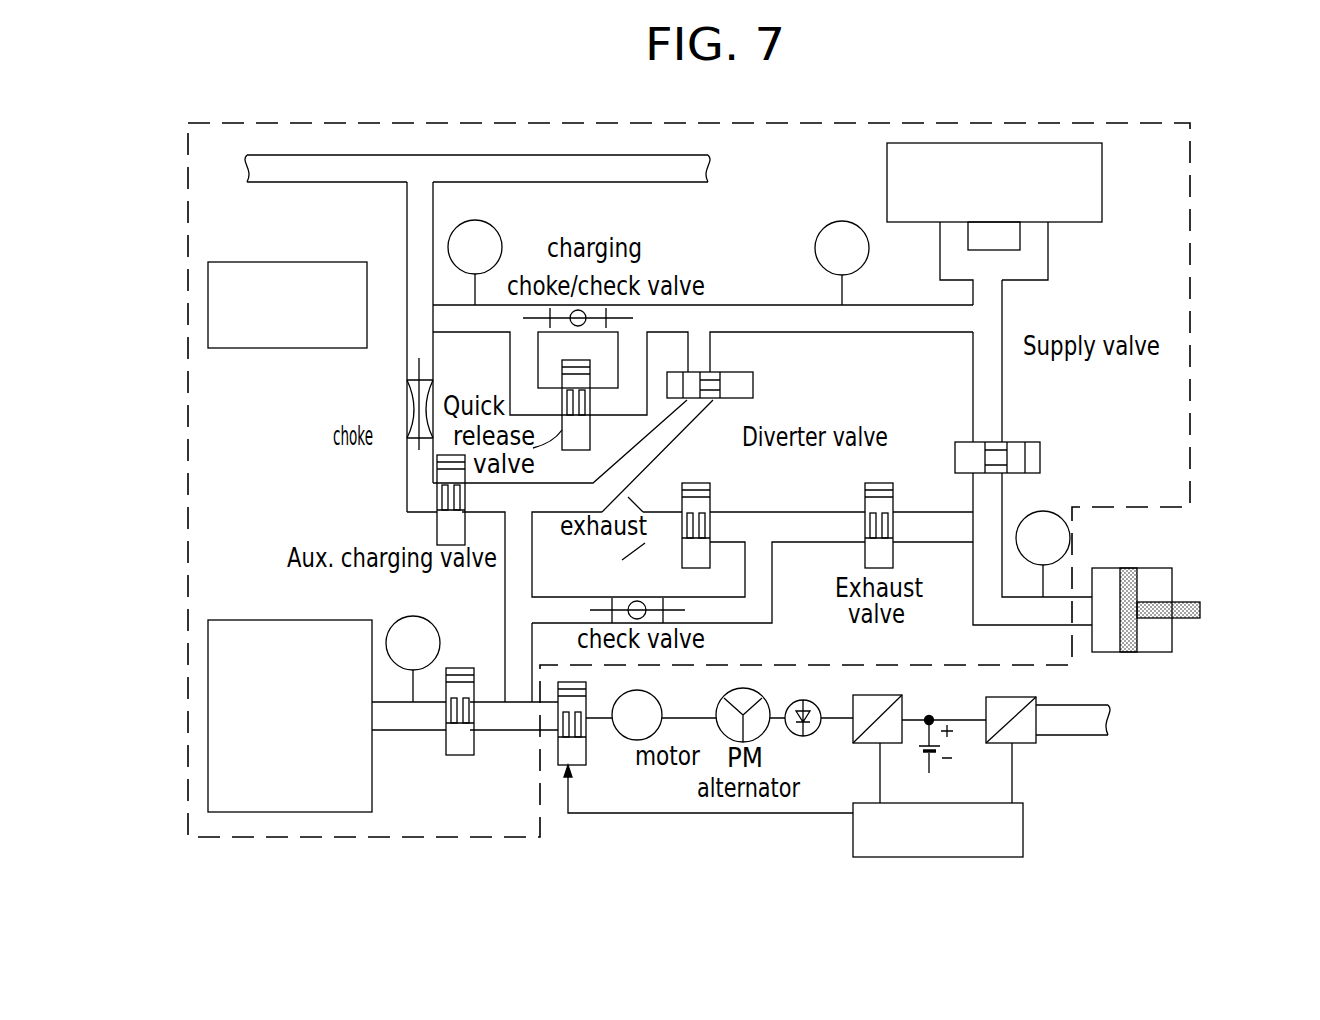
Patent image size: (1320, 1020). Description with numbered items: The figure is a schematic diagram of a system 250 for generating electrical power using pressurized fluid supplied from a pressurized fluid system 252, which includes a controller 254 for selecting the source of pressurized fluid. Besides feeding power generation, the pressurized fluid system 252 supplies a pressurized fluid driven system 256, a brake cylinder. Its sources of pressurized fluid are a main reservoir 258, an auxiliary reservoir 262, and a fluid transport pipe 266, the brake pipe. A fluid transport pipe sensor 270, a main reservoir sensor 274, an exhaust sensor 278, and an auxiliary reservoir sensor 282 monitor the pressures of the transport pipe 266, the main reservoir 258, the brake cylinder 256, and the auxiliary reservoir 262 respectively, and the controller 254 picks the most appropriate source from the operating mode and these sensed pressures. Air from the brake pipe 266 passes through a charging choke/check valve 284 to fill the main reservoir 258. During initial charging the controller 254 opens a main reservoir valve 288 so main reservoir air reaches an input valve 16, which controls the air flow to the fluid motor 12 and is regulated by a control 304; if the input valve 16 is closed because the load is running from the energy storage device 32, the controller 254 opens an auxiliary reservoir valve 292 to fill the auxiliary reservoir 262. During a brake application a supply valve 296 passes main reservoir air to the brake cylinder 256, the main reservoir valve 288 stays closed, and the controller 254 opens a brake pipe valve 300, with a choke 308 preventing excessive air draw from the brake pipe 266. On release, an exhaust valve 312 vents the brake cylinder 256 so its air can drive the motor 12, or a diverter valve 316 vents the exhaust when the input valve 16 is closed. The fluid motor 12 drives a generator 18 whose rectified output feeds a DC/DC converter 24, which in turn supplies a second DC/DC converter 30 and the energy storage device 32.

The fluid motor 12 is at (655, 695).
The input valve 16 is at (580, 768).
The generator 18 is at (748, 692).
The DC/DC converter 24 is at (903, 703).
The second DC/DC converter 30 is at (1022, 746).
The energy storage device 32 is at (929, 773).
The system 250 is at (1105, 788).
The pressurized fluid system 252 is at (1150, 282).
The controller 254 is at (270, 349).
The pressurized fluid driven system 256 is at (1148, 568).
The main reservoir 258 is at (887, 172).
The auxiliary reservoir 262 is at (262, 619).
The fluid transport pipe 266 is at (307, 182).
The fluid transport pipe sensor 270 is at (500, 236).
The main reservoir sensor 274 is at (820, 226).
The exhaust sensor 278 is at (1045, 511).
The auxiliary reservoir sensor 282 is at (438, 624).
The charging choke/check valve 284 is at (627, 312).
The main reservoir valve 288 is at (753, 374).
The auxiliary reservoir valve 292 is at (466, 757).
The supply valve 296 is at (1012, 442).
The brake pipe valve 300 is at (437, 532).
The control 304 is at (945, 857).
The choke 308 is at (407, 408).
The exhaust valve 312 is at (880, 483).
The diverter valve 316 is at (697, 483).